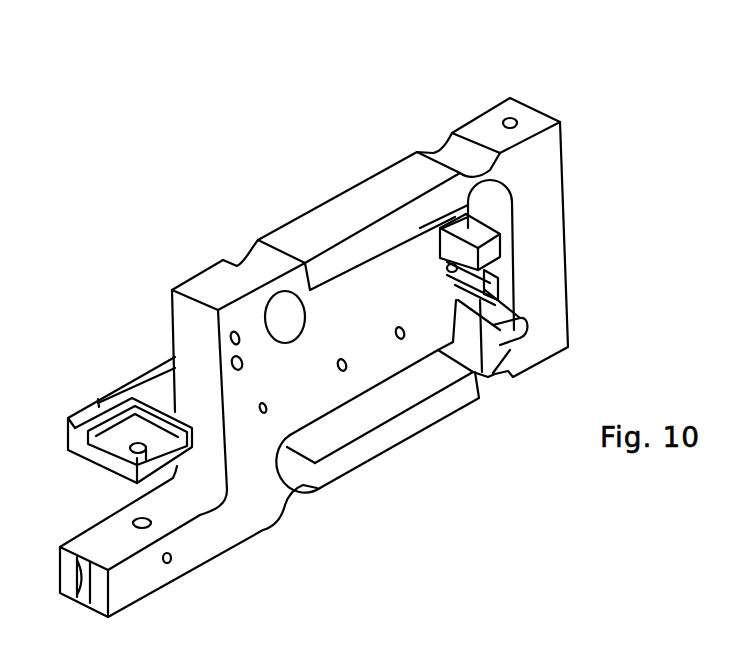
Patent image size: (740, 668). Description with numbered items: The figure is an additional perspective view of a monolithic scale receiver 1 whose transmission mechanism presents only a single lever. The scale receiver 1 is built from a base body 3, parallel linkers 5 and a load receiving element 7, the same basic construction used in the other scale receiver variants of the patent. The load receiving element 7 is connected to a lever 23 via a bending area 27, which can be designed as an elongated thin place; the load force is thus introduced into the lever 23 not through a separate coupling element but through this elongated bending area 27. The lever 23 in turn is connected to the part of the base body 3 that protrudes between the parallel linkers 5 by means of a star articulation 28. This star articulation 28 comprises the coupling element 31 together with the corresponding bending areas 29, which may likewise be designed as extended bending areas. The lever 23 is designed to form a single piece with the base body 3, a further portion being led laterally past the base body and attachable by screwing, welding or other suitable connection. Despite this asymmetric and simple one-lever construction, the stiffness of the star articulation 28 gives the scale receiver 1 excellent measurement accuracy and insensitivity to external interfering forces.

The scale receiver 1 is at (311, 173).
The base body 3 is at (213, 556).
The parallel linkers 5 is at (381, 183).
The load receiving element 7 is at (550, 143).
The lever 23 is at (503, 252).
The bending area 27 is at (493, 292).
The star articulation 28 is at (460, 281).
The bending areas 29 is at (495, 292).
The coupling element 31 is at (470, 233).